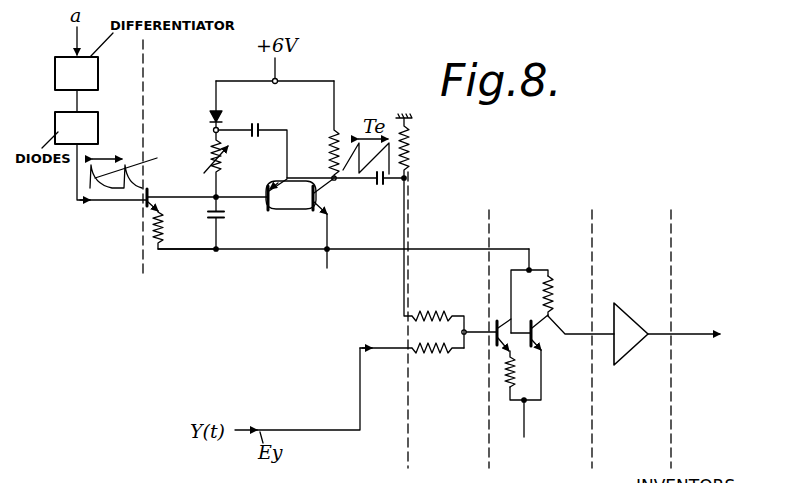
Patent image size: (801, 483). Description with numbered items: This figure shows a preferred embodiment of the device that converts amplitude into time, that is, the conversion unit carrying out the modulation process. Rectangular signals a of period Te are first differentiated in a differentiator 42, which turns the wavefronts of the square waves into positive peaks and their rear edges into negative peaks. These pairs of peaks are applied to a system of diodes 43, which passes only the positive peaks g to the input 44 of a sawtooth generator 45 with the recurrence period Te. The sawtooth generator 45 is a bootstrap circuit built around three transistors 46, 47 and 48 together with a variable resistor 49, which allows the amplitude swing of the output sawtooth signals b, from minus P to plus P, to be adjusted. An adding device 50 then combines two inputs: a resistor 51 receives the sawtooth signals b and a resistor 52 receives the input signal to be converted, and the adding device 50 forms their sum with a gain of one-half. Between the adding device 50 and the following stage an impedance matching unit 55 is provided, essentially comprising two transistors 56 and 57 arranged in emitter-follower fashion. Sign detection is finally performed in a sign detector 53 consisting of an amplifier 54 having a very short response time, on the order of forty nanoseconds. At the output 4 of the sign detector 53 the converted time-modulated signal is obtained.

The differentiator 42 is at (98, 71).
The system of diodes 43 is at (98, 128).
The input of sawtooth generator 44 is at (105, 202).
The sawtooth generator 45 is at (349, 116).
The transistor 46 is at (149, 194).
The transistor 47 is at (267, 206).
The transistor 48 is at (305, 237).
The variable resistor 49 is at (228, 139).
The adding device 50 is at (448, 320).
The resistor 51 is at (435, 310).
The resistor 52 is at (412, 366).
The sign detector 53 is at (644, 339).
The amplifier 54 is at (630, 347).
The impedance matching unit 55 is at (547, 339).
The transistor 56 is at (494, 352).
The transistor 57 is at (534, 338).
The output of sign detector 4 is at (672, 334).